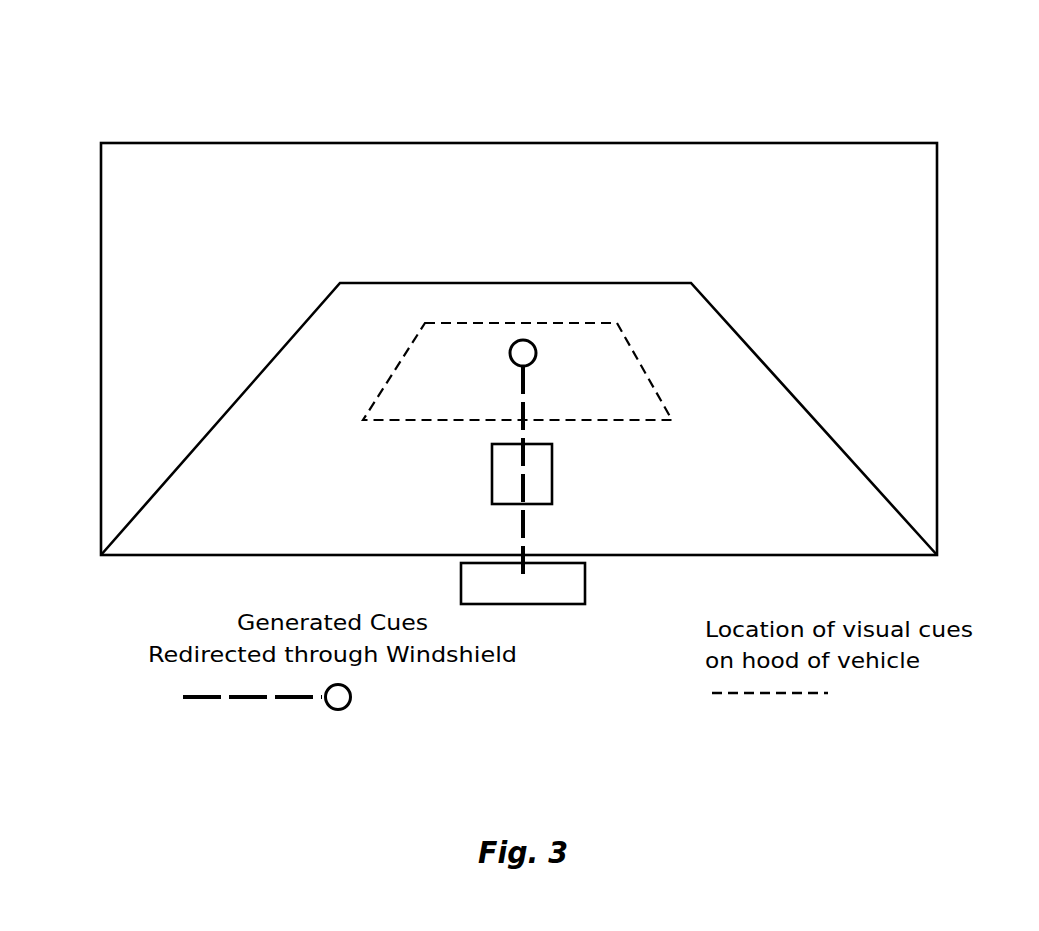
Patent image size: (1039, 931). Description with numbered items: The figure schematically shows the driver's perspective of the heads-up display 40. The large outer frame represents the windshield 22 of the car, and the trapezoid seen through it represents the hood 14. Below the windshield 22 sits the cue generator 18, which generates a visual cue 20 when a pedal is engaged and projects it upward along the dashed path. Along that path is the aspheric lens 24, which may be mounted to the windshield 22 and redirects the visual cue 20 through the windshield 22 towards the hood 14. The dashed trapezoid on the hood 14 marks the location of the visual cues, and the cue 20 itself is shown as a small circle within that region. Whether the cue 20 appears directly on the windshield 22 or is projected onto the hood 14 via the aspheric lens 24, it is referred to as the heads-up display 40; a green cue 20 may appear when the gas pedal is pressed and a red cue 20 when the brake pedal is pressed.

The hood 14 is at (519, 419).
The cue generator 18 is at (550, 588).
The visual cue 20 is at (522, 340).
The windshield 22 is at (519, 349).
The aspheric lens 24 is at (538, 478).
The heads-up display 40 is at (577, 338).